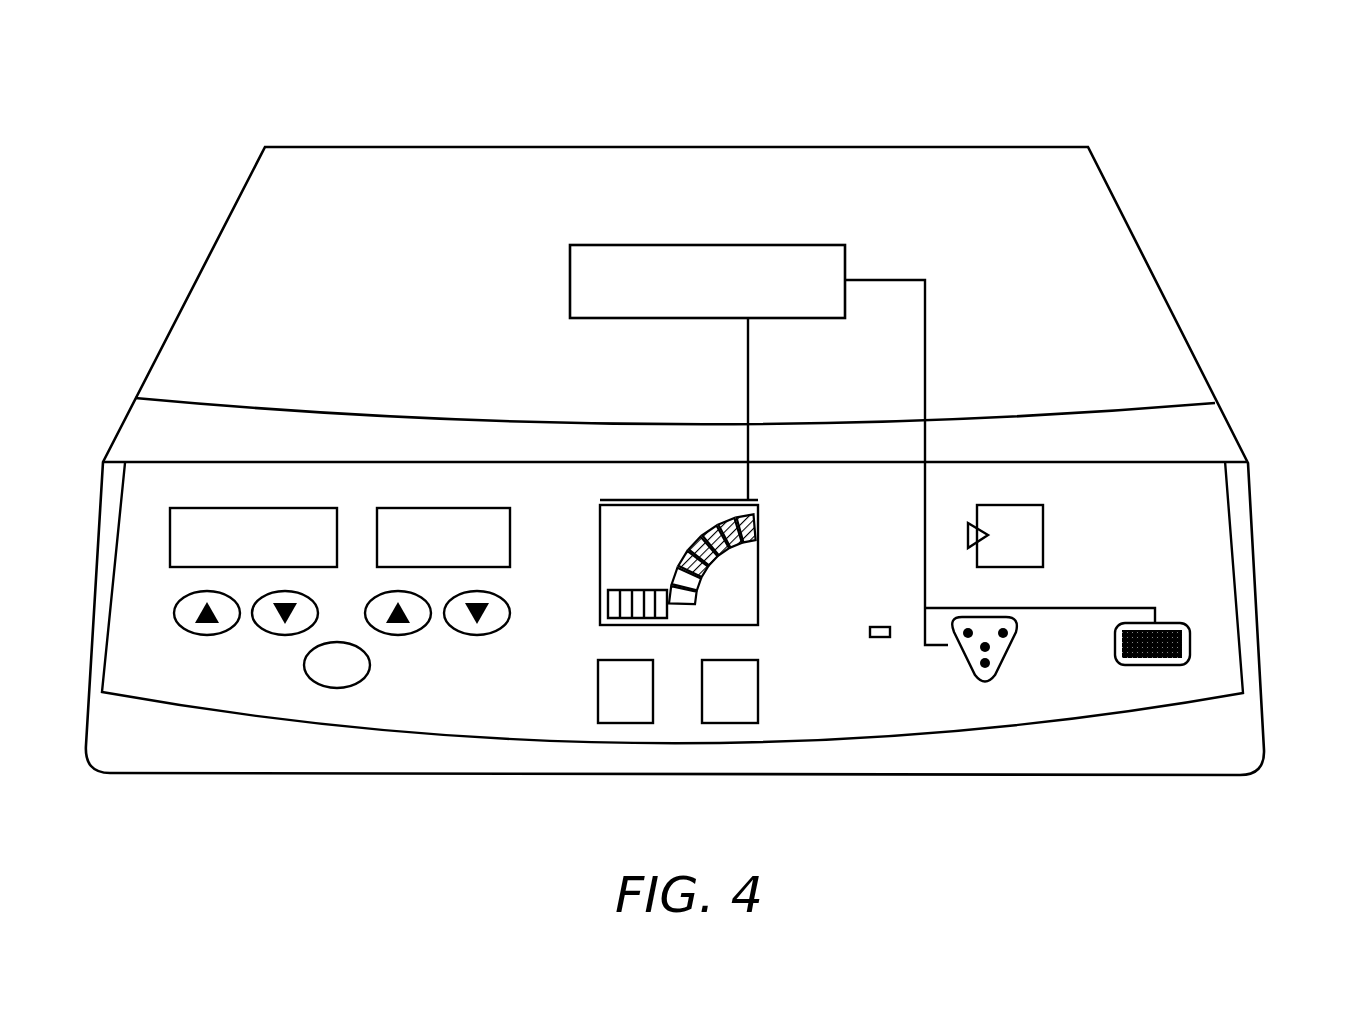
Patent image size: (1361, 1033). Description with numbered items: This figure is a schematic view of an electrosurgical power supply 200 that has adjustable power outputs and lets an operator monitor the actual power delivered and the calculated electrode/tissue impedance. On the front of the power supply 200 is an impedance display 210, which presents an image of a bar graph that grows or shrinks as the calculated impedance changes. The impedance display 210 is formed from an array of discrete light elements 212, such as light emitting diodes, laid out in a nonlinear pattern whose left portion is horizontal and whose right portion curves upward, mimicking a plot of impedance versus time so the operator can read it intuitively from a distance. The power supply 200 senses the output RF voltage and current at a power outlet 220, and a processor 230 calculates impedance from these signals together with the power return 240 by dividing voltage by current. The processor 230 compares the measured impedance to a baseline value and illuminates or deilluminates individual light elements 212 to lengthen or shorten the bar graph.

The electrosurgical power supply 200 is at (807, 117).
The impedance display 210 is at (570, 640).
The discrete light elements 212 is at (667, 590).
The power outlet 220 is at (958, 657).
The processor 230 is at (650, 243).
The power return 240 is at (1192, 642).